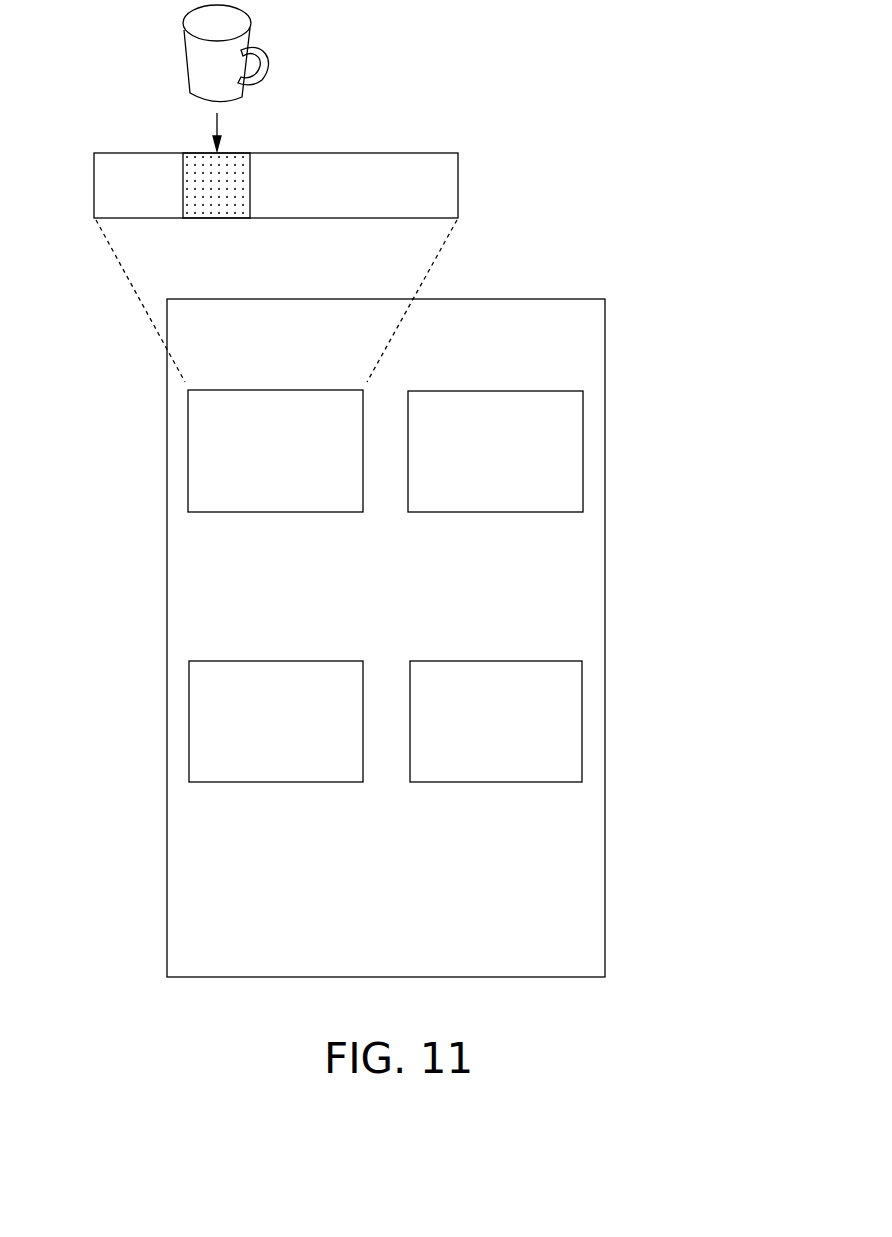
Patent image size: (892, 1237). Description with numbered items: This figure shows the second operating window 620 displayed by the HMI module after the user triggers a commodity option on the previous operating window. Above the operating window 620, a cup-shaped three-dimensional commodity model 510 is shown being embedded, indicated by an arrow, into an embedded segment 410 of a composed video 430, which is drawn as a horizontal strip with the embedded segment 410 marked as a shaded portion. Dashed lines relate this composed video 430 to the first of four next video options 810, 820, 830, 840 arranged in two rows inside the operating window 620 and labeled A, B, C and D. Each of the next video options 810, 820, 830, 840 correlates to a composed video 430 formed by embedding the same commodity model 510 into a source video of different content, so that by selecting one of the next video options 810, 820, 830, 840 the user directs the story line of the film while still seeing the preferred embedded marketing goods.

The 3D commodity model 510 is at (195, 62).
The embedded segment 410 is at (241, 152).
The composed video 430 is at (410, 152).
The operating window 620 is at (570, 298).
The next video option 810 is at (188, 457).
The next video option 820 is at (584, 457).
The next video option 830 is at (189, 731).
The next video option 840 is at (583, 731).